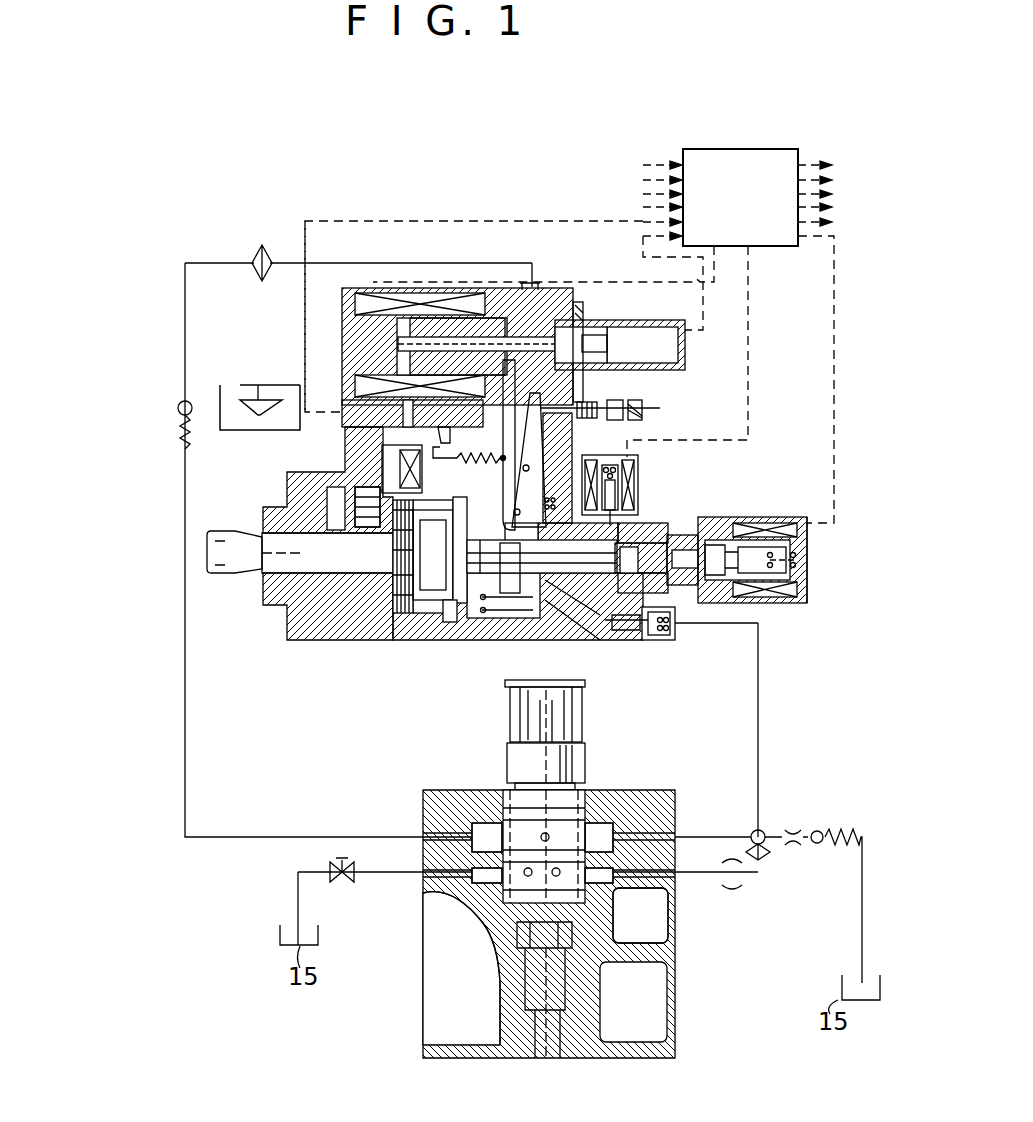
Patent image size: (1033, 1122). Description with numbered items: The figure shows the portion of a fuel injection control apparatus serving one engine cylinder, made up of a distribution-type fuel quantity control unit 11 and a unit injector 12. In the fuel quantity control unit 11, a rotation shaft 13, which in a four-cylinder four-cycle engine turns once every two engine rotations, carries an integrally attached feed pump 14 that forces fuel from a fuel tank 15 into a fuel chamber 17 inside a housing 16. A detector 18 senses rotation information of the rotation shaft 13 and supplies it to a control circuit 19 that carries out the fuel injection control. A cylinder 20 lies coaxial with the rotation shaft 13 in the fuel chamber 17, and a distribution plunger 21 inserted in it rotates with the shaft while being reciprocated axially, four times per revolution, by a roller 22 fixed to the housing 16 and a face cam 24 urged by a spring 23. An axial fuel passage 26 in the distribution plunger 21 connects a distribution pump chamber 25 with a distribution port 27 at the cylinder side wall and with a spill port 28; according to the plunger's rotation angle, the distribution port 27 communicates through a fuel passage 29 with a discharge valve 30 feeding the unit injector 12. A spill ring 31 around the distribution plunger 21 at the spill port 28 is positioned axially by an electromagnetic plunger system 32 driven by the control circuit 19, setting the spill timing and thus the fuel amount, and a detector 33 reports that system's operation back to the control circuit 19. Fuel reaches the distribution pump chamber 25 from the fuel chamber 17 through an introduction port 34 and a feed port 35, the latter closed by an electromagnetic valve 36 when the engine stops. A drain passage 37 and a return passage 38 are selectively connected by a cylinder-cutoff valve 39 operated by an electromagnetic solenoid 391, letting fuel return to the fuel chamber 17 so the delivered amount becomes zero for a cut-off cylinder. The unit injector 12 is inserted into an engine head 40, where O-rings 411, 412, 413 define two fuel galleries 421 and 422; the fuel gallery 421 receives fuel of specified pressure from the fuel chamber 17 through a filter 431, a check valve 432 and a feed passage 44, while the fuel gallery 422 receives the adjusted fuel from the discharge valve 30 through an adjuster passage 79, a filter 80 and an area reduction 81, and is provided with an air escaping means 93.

The fuel quantity control unit 11 is at (303, 334).
The unit injector 12 is at (491, 748).
The rotation shaft 13 is at (245, 542).
The feed pump 14 is at (338, 490).
The fuel tank 15 is at (242, 405).
The housing 16 is at (554, 297).
The fuel chamber 17 is at (580, 380).
The detector 18 is at (400, 461).
The control circuit 19 is at (776, 154).
The cylinder 20 is at (660, 601).
The distribution plunger 21 is at (545, 588).
The roller 22 is at (440, 613).
The spring 23 is at (506, 618).
The face cam 24 is at (472, 608).
The distribution pump chamber 25 is at (632, 547).
The fuel passage 26 is at (640, 523).
The distribution port 27 is at (577, 588).
The spill port 28 is at (505, 532).
The fuel passage 29 is at (578, 608).
The discharge valve 30 is at (675, 638).
The spill ring 31 is at (535, 498).
The electromagnetic plunger system 32 is at (563, 310).
The detector 33 is at (678, 350).
The introduction port 34 is at (620, 485).
The feed port 35 is at (635, 483).
The electromagnetic valve 36 is at (620, 473).
The drain passage 37 is at (690, 598).
The return passage 38 is at (675, 535).
The cylinder-cutoff valve 39 is at (707, 522).
The electromagnetic solenoid 391 is at (807, 590).
The engine head 40 is at (665, 965).
The feed passage 44 is at (185, 688).
The adjuster passage 79 is at (765, 747).
The filter 80 is at (763, 866).
The area reduction 81 is at (734, 890).
The air escaping means 93 is at (344, 884).
The O-ring 411 is at (582, 808).
The O-ring 412 is at (515, 887).
The O-ring 413 is at (647, 897).
The fuel gallery 421 is at (480, 813).
The fuel gallery 422 is at (472, 890).
The filter 431 is at (266, 245).
The check valve 432 is at (178, 408).